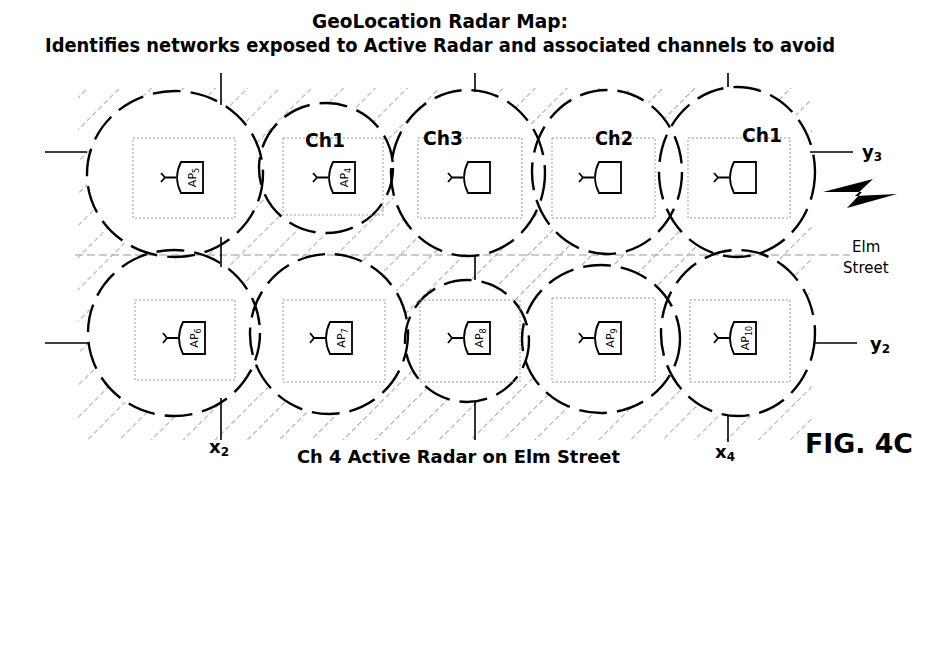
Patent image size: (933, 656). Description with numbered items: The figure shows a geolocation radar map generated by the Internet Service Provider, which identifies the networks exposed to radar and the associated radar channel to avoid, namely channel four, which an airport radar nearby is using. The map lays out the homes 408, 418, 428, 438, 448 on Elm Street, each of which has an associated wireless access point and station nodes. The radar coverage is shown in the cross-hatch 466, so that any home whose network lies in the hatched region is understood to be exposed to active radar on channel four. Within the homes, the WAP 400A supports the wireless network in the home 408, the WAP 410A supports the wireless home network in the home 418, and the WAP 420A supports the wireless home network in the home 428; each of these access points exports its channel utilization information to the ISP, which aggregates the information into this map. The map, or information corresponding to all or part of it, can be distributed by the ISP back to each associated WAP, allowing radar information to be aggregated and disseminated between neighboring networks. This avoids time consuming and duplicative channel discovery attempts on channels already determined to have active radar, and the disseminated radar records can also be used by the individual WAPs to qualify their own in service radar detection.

The cross-hatch 466 is at (100, 103).
The home 448 is at (157, 142).
The home 438 is at (350, 138).
The home 428 is at (470, 142).
The home 418 is at (577, 138).
The home 408 is at (790, 142).
The WAP 420A is at (478, 193).
The WAP 410A is at (598, 193).
The WAP 400A is at (733, 190).